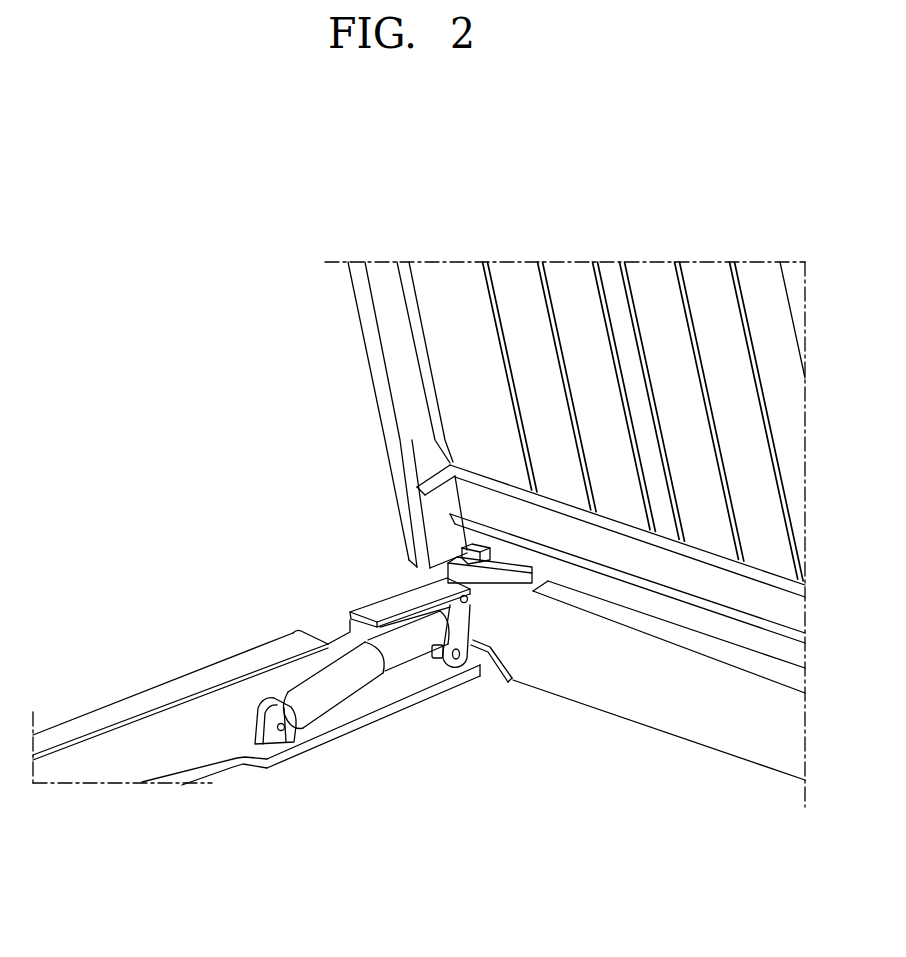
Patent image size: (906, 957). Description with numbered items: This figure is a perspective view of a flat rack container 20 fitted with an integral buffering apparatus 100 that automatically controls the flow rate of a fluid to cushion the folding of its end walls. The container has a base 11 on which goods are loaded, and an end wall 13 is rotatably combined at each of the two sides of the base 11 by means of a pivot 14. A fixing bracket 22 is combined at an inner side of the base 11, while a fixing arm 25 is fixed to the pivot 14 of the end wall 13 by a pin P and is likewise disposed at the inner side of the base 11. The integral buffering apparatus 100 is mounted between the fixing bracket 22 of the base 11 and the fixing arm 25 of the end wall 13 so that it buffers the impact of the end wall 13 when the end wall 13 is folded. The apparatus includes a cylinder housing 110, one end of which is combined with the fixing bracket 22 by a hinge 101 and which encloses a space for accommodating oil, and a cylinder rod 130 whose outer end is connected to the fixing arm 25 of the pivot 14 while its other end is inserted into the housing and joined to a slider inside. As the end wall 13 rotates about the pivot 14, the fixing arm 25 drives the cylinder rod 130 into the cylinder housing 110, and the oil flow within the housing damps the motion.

The base 11 is at (166, 690).
The end wall 13 is at (571, 288).
The pivot 14 is at (457, 670).
The flat rack container 20 is at (247, 208).
The fixing bracket 22 is at (277, 769).
The fixing arm 25 is at (471, 668).
The integral buffering apparatus 100 is at (350, 703).
The hinge 101 is at (290, 731).
The cylinder housing 110 is at (313, 697).
The cylinder rod 130 is at (398, 634).
The pin P is at (468, 605).